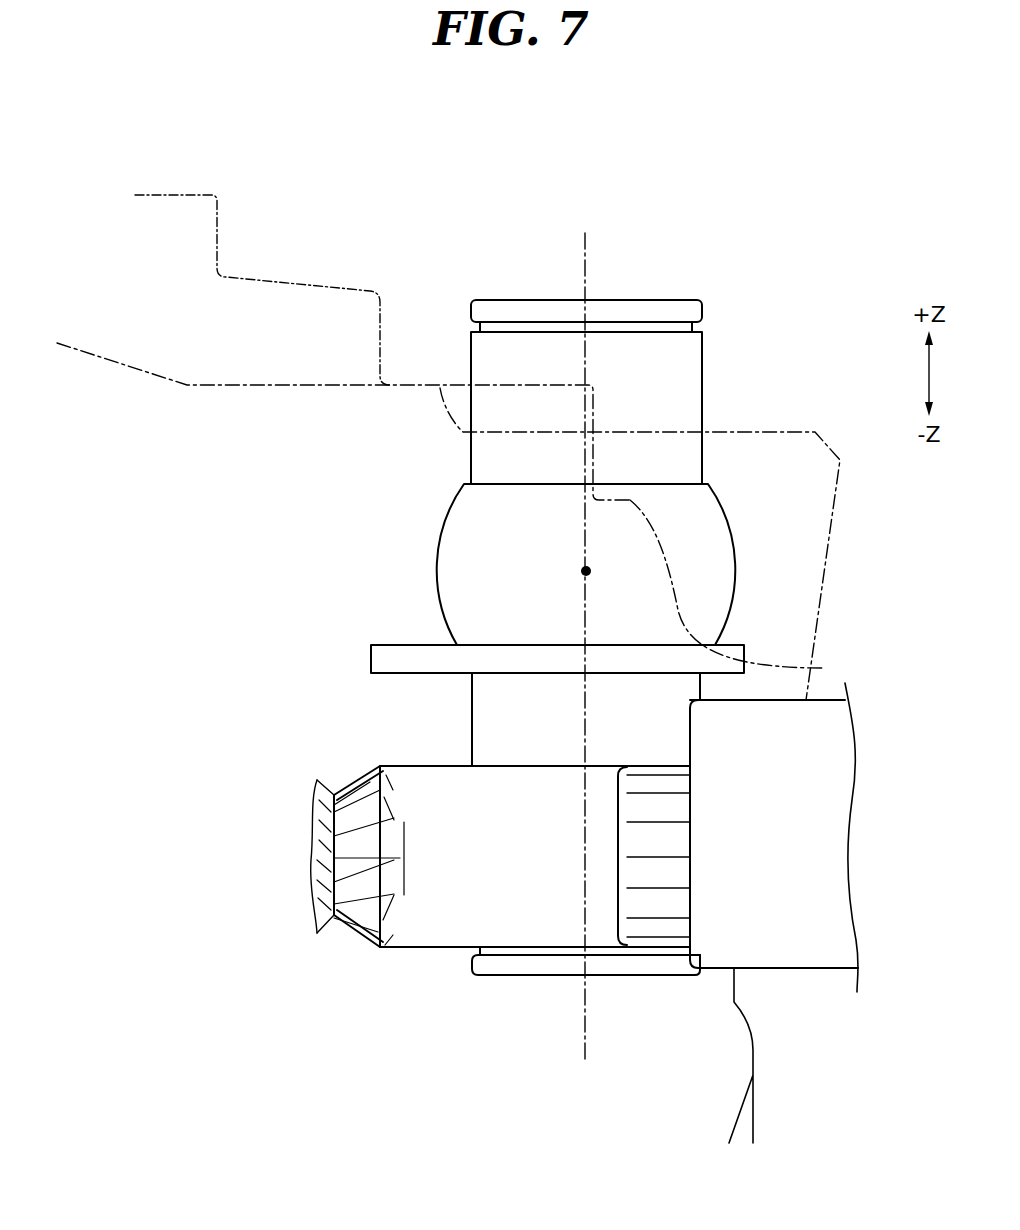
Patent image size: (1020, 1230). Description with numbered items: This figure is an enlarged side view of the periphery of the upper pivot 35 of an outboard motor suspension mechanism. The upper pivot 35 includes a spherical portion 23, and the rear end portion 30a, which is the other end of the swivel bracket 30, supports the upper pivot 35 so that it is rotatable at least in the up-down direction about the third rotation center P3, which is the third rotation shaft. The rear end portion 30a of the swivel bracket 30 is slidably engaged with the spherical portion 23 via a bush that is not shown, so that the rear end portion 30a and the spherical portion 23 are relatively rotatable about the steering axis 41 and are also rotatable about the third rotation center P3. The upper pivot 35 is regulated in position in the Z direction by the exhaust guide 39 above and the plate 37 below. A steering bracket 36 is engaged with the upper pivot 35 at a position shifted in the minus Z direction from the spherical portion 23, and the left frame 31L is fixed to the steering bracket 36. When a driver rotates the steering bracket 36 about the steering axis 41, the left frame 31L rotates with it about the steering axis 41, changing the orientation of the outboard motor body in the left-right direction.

The spherical portion 23 is at (450, 510).
The swivel bracket 30 is at (112, 361).
The rear end portion 30a is at (763, 448).
The left frame 31L is at (735, 880).
The upper pivot 35 is at (702, 352).
The steering bracket 36 is at (465, 930).
The plate 37 is at (735, 645).
The exhaust guide 39 is at (216, 228).
The steering axis 41 is at (587, 274).
The third rotation center P3 is at (582, 568).